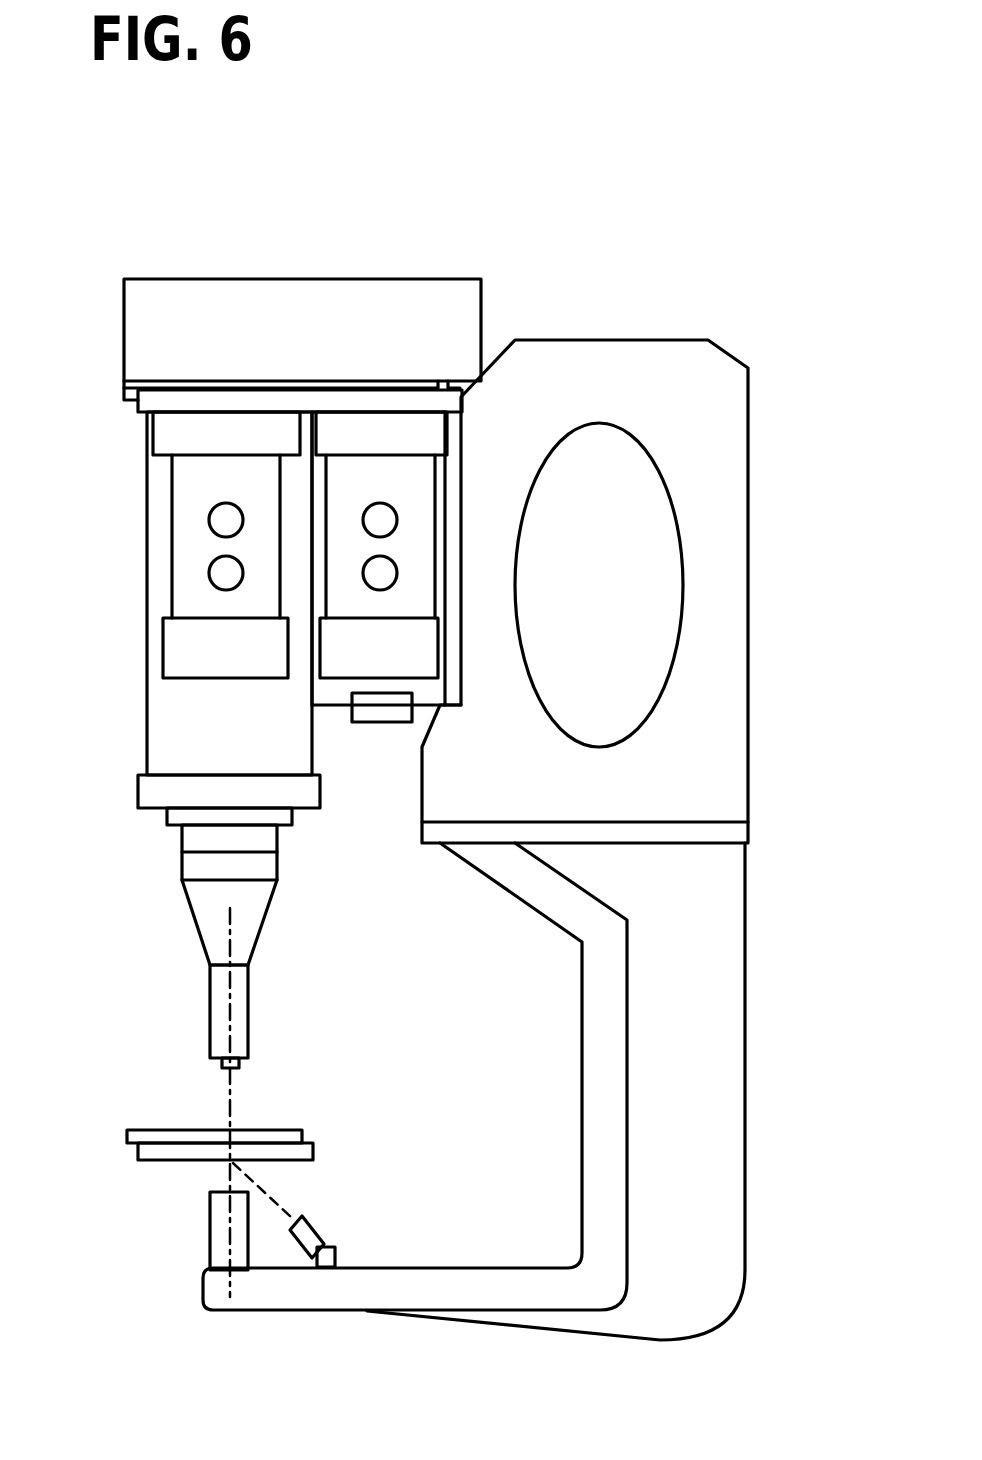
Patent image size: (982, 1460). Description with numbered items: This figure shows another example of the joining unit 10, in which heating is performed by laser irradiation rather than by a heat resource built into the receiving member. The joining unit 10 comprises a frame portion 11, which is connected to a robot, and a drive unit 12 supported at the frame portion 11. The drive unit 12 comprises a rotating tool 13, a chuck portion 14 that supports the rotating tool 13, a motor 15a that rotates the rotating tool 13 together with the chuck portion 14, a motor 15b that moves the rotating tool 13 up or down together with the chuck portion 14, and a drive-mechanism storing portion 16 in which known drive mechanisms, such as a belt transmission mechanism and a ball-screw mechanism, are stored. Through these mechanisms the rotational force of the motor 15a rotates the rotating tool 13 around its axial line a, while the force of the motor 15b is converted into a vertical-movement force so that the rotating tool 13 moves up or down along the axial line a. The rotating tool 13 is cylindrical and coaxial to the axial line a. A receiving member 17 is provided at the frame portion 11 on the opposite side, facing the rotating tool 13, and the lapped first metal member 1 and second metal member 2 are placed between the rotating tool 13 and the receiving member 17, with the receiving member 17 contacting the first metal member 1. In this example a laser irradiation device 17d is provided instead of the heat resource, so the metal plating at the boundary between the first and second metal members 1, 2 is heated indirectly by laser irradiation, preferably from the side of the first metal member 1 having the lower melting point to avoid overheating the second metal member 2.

The first metal member 1 is at (313, 1148).
The second metal member 2 is at (302, 1135).
The axial line a is at (228, 1112).
The joining unit 10 is at (532, 755).
The frame portion 11 is at (731, 631).
The drive unit 12 is at (327, 608).
The rotating tool 13 is at (243, 1010).
The chuck portion 14 is at (250, 922).
The motor 15a is at (183, 543).
The motor 15b is at (422, 492).
The drive-mechanism storing portion 16 is at (298, 293).
The receiving member 17 is at (210, 1227).
The laser irradiation device 17d is at (315, 1230).